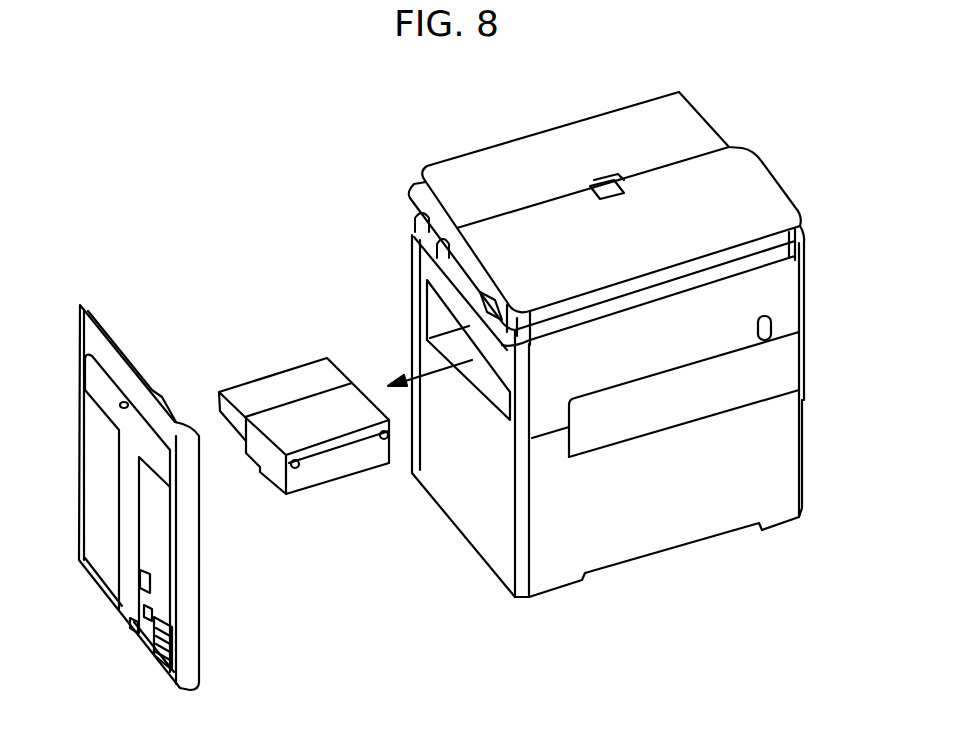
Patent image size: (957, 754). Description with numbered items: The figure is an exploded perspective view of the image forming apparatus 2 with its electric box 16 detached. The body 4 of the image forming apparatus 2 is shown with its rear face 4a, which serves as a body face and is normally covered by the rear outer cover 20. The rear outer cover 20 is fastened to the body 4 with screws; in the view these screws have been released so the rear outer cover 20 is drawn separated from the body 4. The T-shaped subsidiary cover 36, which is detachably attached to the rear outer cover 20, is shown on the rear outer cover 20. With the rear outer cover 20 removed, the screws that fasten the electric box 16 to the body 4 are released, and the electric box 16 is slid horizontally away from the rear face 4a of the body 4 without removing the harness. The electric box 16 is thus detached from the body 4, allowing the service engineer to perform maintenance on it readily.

The image forming apparatus 2 is at (440, 120).
The body 4 is at (812, 353).
The rear face 4a is at (466, 483).
The electric box 16 is at (277, 373).
The rear outer cover 20 is at (200, 605).
The subsidiary cover 36 is at (122, 482).